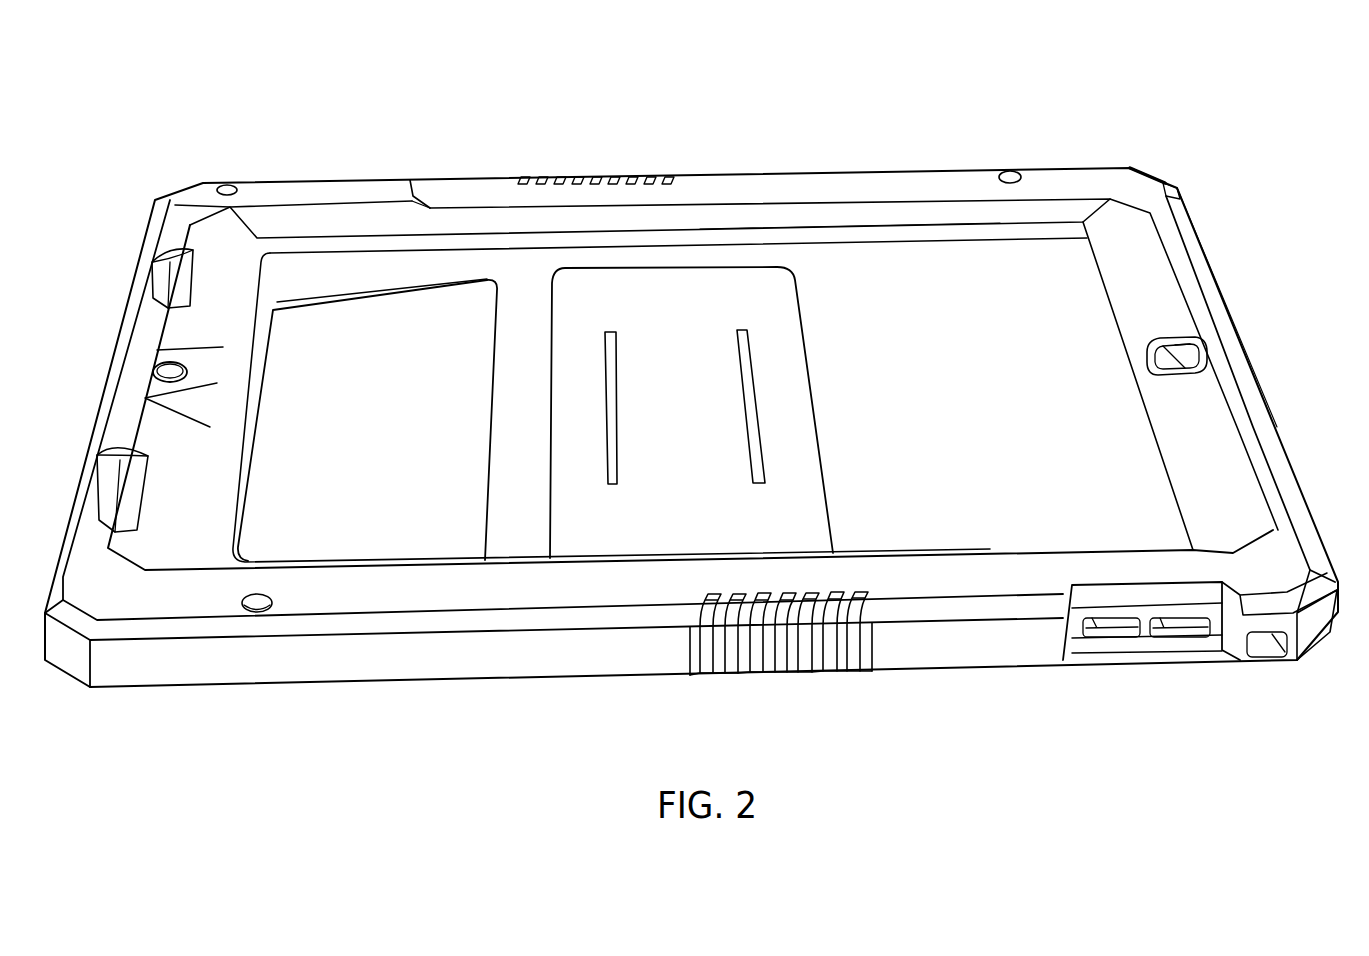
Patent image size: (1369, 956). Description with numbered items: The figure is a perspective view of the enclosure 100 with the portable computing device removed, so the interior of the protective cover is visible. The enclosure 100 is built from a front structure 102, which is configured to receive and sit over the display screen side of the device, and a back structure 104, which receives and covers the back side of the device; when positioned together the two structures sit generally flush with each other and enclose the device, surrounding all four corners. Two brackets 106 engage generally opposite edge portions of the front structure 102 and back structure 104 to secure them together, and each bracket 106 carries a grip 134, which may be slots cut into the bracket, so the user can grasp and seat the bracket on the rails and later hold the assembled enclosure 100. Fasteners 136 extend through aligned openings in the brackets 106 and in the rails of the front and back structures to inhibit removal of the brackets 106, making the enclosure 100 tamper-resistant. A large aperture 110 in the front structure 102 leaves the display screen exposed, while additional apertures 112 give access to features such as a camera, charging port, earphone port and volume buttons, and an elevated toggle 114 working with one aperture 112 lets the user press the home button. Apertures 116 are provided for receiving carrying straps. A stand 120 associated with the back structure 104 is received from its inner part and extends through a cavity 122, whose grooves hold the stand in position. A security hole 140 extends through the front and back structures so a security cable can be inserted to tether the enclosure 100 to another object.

The enclosure 100 is at (1062, 122).
The front structure 102 is at (1252, 420).
The back structure 104 is at (1298, 672).
The bracket 106 is at (436, 176).
The aperture 110 is at (853, 228).
The aperture 112 is at (1177, 623).
The elevated toggle 114 is at (163, 373).
The aperture for carrying strap 116 is at (163, 272).
The stand 120 is at (661, 304).
The cavity 122 is at (830, 517).
The grip 134 is at (552, 176).
The fastener 136 is at (1012, 165).
The security hole 140 is at (229, 184).